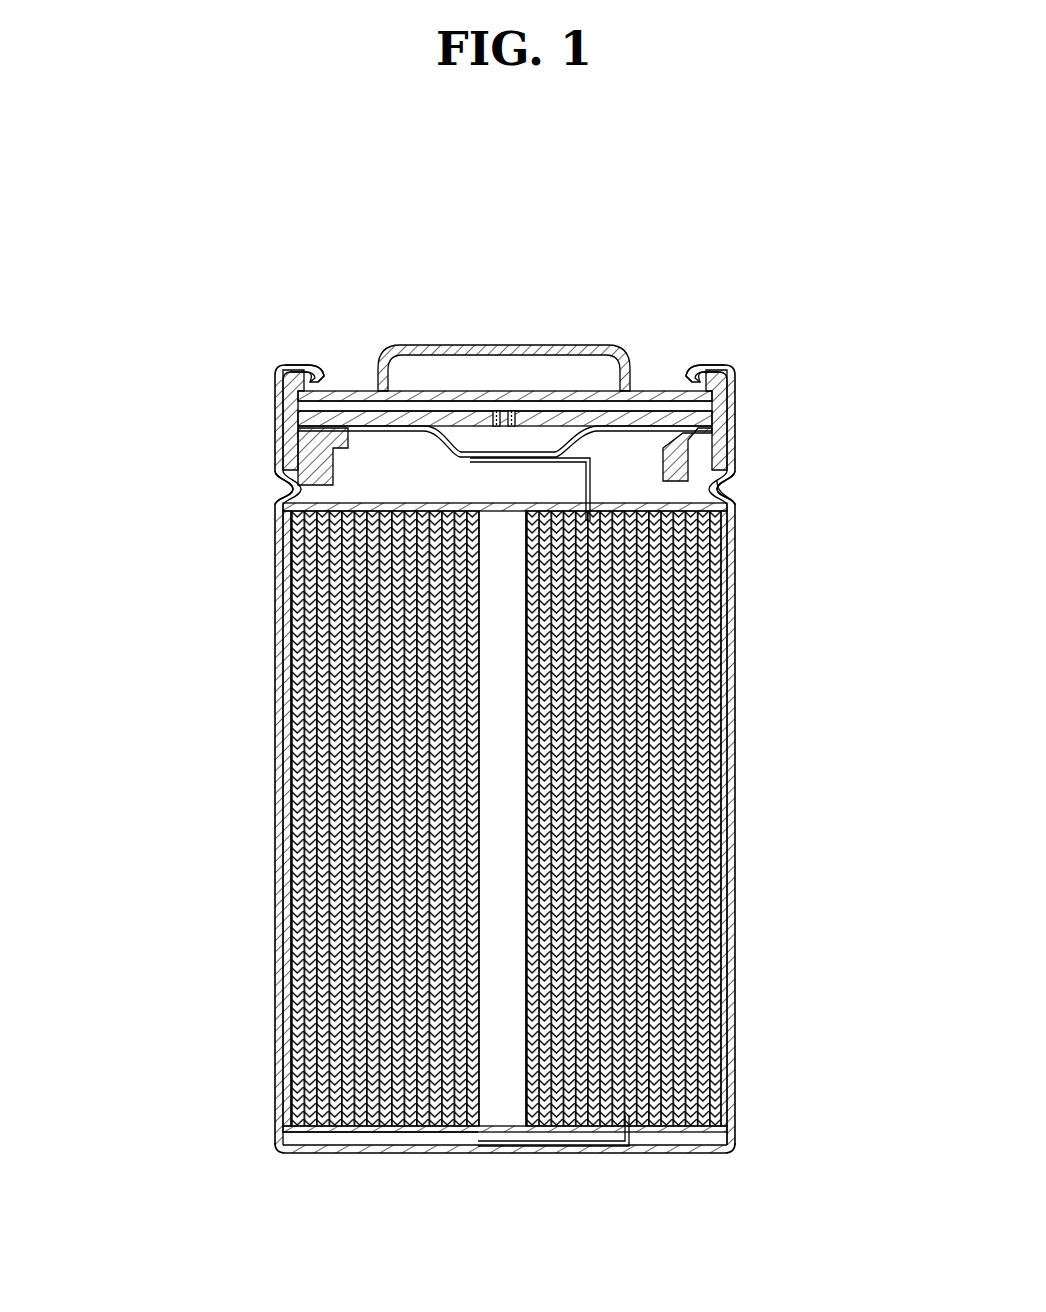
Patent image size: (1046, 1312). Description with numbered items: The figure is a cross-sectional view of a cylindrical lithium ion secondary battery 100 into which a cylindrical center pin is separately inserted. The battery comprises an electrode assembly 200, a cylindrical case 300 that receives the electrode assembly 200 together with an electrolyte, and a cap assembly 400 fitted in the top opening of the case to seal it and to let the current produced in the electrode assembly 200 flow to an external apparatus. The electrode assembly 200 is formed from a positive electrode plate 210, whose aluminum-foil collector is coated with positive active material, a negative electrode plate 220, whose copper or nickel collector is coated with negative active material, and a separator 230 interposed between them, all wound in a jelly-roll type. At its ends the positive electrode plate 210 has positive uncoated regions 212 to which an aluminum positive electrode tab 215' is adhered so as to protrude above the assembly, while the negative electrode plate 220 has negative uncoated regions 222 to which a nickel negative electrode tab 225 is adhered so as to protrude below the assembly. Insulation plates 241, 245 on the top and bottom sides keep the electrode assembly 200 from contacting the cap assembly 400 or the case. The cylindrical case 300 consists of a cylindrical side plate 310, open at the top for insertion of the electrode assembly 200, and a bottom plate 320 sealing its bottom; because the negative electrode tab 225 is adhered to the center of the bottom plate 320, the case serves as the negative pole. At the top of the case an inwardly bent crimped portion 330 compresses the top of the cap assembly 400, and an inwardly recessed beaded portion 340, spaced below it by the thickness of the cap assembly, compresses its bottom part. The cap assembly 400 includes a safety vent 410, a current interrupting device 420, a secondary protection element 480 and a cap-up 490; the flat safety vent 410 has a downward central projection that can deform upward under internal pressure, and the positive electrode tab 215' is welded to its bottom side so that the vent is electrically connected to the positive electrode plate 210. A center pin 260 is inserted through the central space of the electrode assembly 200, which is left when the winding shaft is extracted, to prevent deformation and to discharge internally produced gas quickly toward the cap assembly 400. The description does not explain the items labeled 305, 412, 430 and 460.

The cylindrical lithium ion secondary battery 100 is at (763, 316).
The electrode assembly 200 is at (882, 472).
The positive electrode plate 210 is at (690, 648).
The positive uncoated regions 212 is at (560, 522).
The positive electrode tab 215' is at (792, 482).
The negative electrode plate 220 is at (723, 558).
The negative uncoated regions 222 is at (617, 1095).
The negative electrode tab 225 is at (603, 1147).
The separator 230 is at (712, 612).
The insulation plate 241 is at (730, 504).
The insulation plate 245 is at (724, 1137).
The center pin 260 is at (435, 1125).
The cylindrical case 300 is at (118, 622).
The gasket 305 is at (292, 355).
The cylindrical side plate 310 is at (268, 548).
The bottom plate 320 is at (303, 1148).
The crimped portion 330 is at (270, 372).
The beaded portion 340 is at (285, 481).
The cap assembly 400 is at (628, 240).
The safety vent 410 is at (413, 400).
The cap plate hole 412 is at (632, 402).
The current interrupting device 420 is at (573, 400).
The current interrupt device 430 is at (503, 403).
The insulator 460 is at (488, 403).
The secondary protection element 480 is at (603, 400).
The cap-up 490 is at (388, 337).